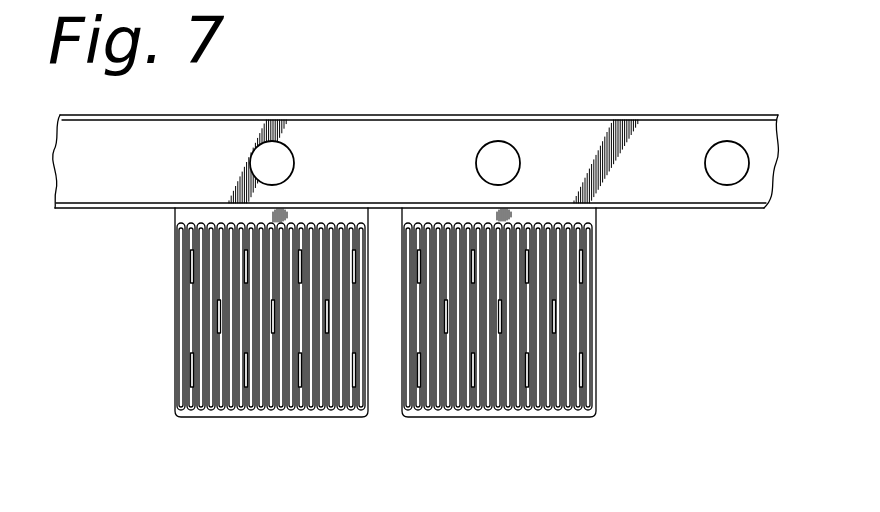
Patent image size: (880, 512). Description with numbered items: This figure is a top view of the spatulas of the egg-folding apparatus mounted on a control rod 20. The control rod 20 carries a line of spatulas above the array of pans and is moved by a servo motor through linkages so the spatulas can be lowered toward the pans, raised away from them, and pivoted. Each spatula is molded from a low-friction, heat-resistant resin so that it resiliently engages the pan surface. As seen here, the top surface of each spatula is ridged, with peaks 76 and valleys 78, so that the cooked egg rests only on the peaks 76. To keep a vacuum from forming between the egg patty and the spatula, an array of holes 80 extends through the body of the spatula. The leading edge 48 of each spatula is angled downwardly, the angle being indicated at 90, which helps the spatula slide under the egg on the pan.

The control rod 20 is at (771, 176).
The leading edge 48 is at (543, 358).
The peaks 76 is at (498, 365).
The valleys 78 is at (568, 415).
The holes 80 is at (560, 393).
The downward angle of leading edge 90 is at (577, 415).